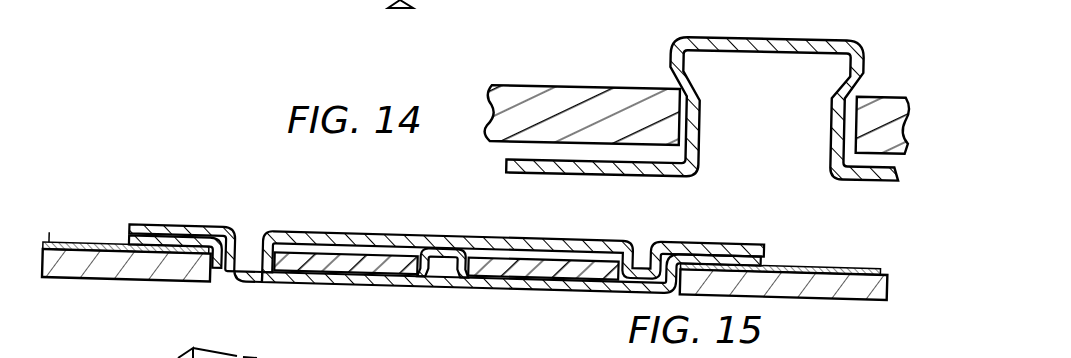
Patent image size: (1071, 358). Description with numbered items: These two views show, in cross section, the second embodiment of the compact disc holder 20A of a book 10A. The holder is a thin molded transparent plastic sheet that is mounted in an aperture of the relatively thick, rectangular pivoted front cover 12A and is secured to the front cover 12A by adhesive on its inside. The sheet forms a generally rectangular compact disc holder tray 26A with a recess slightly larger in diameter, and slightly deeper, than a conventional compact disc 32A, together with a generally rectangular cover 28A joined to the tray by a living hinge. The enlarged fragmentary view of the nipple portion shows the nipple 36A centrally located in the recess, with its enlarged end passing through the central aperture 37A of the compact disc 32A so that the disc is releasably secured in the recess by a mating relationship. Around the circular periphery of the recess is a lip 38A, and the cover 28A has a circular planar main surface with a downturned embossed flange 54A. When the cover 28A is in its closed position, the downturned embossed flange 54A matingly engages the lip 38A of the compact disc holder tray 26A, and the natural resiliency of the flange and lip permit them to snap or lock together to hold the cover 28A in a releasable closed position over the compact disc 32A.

In FIG. 14, the book 10A is at (355, 10).
In FIG. 15, the front cover 12A is at (137, 270).
In FIG. 15, the compact disc holder 20A is at (168, 222).
In FIG. 14, the compact disc holder tray 26A is at (613, 168).
In FIG. 15, the compact disc holder tray 26A is at (757, 258).
In FIG. 15, the cover 28A is at (340, 232).
In FIG. 14, the compact disc 32A is at (597, 100).
In FIG. 15, the compact disc 32A is at (312, 275).
In FIG. 14, the nipple 36A is at (805, 44).
In FIG. 15, the nipple 36A is at (437, 272).
In FIG. 14, the central aperture 37A is at (852, 124).
In FIG. 15, the lip 38A is at (208, 257).
In FIG. 15, the downturned embossed flange 54A is at (233, 257).